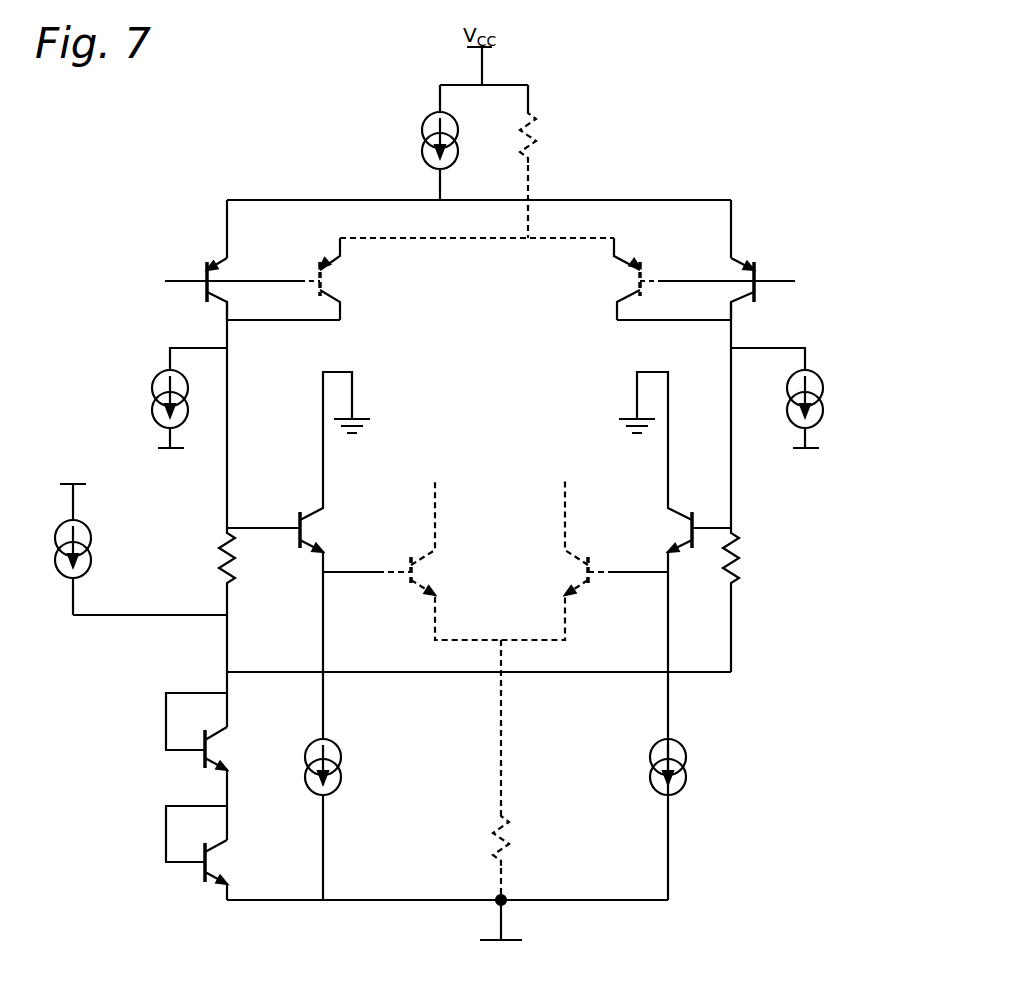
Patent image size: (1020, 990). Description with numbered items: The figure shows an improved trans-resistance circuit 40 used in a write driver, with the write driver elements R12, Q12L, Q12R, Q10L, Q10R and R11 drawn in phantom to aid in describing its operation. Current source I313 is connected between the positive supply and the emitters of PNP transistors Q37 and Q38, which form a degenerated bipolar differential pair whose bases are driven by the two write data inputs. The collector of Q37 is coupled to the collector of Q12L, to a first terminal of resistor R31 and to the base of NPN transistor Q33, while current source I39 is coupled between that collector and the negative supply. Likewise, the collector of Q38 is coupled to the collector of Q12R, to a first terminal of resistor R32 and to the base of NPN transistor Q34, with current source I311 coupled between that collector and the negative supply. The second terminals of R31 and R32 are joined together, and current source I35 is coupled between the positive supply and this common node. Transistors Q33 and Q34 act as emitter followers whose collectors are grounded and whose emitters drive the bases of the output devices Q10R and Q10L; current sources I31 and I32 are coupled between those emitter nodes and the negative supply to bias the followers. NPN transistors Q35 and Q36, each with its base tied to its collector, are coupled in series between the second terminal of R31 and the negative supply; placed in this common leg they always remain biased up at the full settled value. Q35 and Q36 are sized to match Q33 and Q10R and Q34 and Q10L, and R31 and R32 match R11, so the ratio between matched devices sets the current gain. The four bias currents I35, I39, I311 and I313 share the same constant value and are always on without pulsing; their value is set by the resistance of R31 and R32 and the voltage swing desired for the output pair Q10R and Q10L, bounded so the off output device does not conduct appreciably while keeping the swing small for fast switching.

The trans-resistance circuit 40 is at (846, 91).
The current source I313 is at (401, 142).
The resistor R12 is at (552, 161).
The PNP transistor Q37 is at (158, 274).
The PNP transistor Q38 is at (791, 274).
The transistor Q12L is at (298, 279).
The transistor Q12R is at (661, 279).
The current source I39 is at (151, 416).
The current source I311 is at (823, 416).
The current source I35 is at (110, 533).
The resistor R31 is at (199, 559).
The resistor R32 is at (759, 559).
The NPN transistor Q33 is at (302, 472).
The NPN transistor Q34 is at (671, 636).
The output device Q10R is at (439, 544).
The output device Q10L is at (556, 544).
The resistor R11 is at (519, 805).
The NPN transistor Q35 is at (222, 766).
The NPN transistor Q36 is at (222, 853).
The current source I31 is at (344, 736).
The current source I32 is at (690, 767).